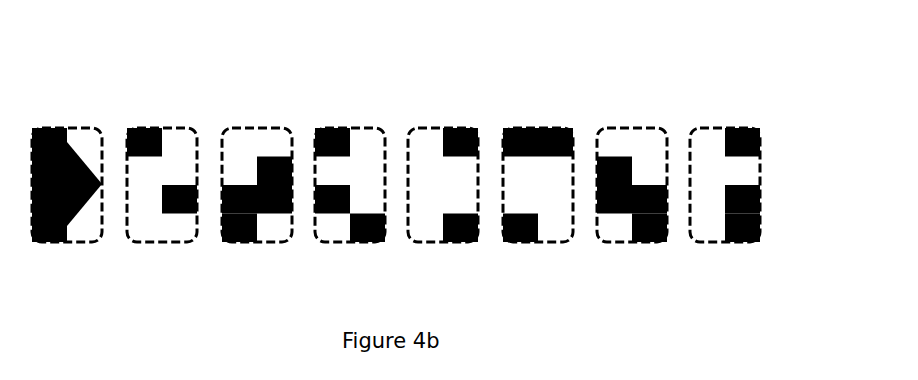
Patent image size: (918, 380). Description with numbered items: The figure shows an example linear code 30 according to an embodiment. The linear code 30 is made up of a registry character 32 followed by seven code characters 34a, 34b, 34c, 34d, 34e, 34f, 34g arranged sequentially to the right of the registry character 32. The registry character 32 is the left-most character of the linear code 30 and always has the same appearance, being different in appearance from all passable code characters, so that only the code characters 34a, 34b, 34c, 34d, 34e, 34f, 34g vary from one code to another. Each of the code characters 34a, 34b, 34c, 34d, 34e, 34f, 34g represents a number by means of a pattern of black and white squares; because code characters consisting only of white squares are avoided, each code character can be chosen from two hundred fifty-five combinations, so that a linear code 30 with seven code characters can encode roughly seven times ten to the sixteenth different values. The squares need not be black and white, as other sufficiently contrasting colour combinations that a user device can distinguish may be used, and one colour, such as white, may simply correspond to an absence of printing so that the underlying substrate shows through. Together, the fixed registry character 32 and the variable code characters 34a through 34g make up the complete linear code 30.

The linear code 30 is at (708, 92).
The registry character 32 is at (52, 242).
The code character 34a is at (157, 242).
The code character 34b is at (253, 242).
The code character 34c is at (355, 242).
The code character 34d is at (445, 242).
The code character 34e is at (530, 242).
The code character 34f is at (635, 242).
The code character 34g is at (728, 242).